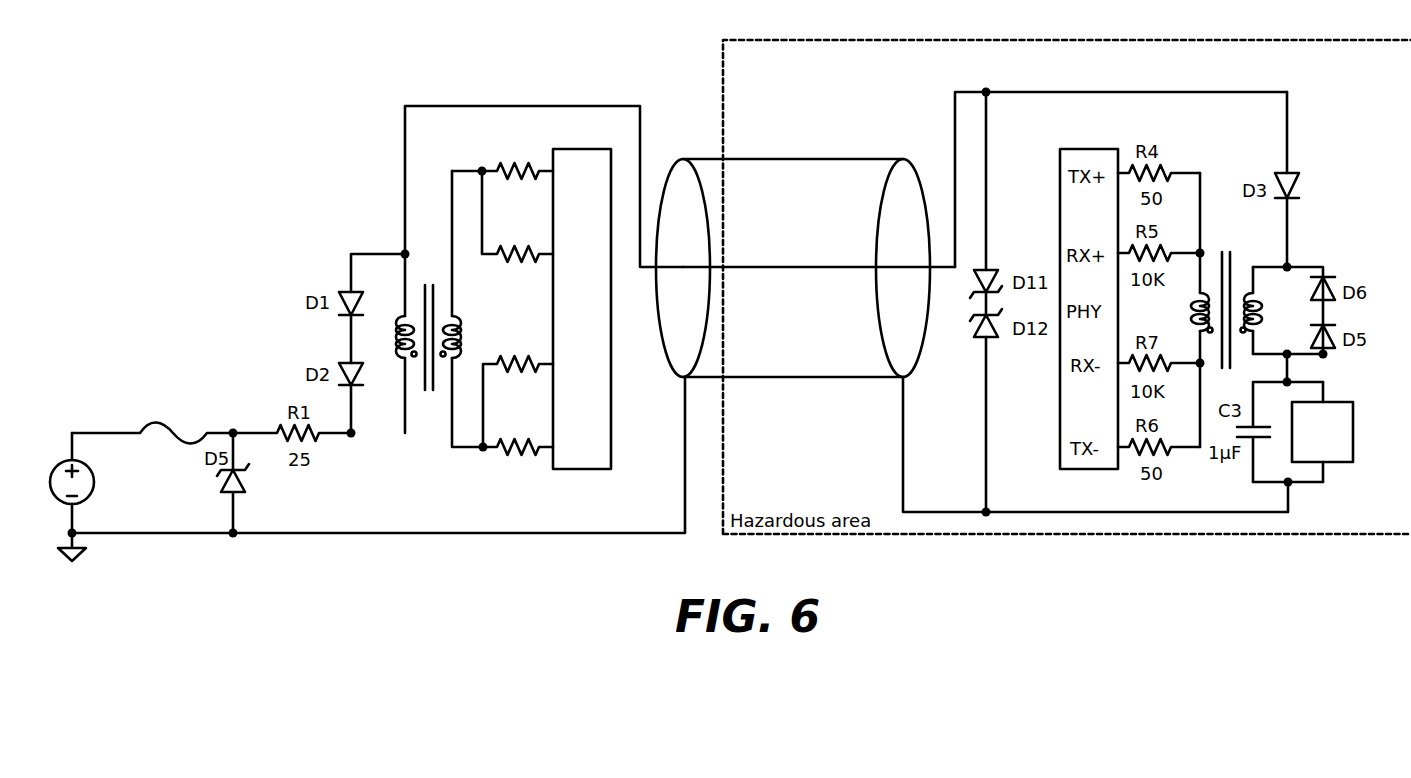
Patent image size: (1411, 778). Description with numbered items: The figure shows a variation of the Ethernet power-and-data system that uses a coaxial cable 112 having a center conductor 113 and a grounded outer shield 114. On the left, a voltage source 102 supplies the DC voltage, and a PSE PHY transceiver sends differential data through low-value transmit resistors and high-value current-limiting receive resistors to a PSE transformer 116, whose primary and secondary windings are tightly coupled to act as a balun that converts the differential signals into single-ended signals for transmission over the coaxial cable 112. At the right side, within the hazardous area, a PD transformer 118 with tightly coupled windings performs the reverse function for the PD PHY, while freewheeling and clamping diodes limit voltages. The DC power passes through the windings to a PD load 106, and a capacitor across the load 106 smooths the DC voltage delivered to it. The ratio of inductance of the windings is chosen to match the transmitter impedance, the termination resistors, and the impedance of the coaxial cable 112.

The voltage source 102 is at (94, 490).
The PD load 106 is at (1327, 398).
The coaxial cable 112 is at (813, 150).
The center conductor 113 is at (526, 275).
The grounded outer shield 114 is at (730, 377).
The PSE transformer 116 is at (428, 195).
The PD transformer 118 is at (1220, 222).